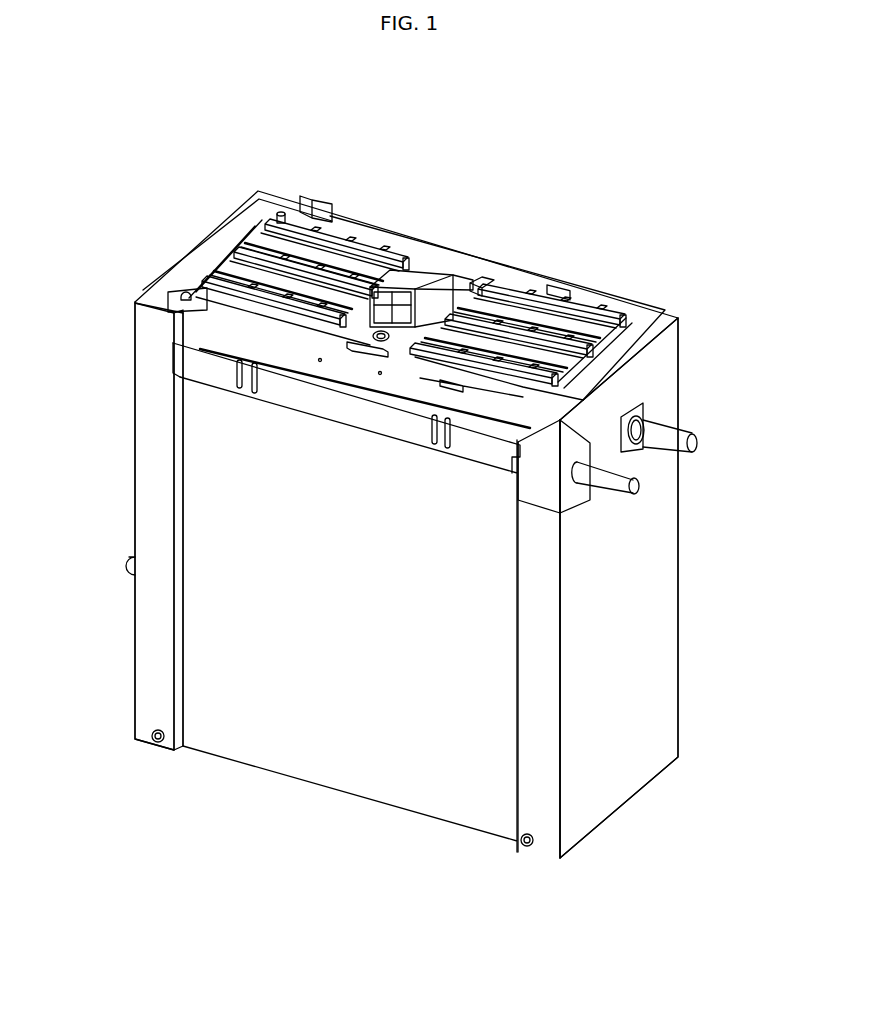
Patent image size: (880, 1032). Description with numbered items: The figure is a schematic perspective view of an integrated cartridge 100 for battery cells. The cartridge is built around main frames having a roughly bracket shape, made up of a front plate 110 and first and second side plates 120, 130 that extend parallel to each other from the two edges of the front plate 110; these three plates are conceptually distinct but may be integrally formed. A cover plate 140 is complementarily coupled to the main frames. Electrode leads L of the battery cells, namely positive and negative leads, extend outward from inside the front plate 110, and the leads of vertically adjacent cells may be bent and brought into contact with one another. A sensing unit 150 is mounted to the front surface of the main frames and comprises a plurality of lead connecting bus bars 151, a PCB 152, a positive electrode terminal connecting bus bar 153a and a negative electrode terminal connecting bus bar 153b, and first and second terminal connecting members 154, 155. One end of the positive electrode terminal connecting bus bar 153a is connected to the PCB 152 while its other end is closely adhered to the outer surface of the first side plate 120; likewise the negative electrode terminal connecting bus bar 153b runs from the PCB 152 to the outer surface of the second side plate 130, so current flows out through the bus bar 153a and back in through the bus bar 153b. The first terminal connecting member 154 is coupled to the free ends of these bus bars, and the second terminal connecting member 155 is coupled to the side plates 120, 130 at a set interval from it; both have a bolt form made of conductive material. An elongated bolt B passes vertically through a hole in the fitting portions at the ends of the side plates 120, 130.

The integrated cartridge 100 is at (141, 92).
The front plate 110 is at (649, 320).
The first side plate 120 is at (148, 468).
The second side plate 130 is at (672, 700).
The cover plate 140 is at (348, 772).
The sensing unit 150 is at (462, 258).
The lead connecting bus bar 151 is at (503, 293).
The PCB 152 is at (480, 270).
The positive electrode terminal connecting bus bar 153a is at (318, 205).
The negative electrode terminal connecting bus bar 153b is at (543, 497).
The first terminal connecting member 154 is at (640, 487).
The second terminal connecting member 155 is at (697, 443).
The electrode lead L is at (365, 240).
The bolt B is at (155, 745).